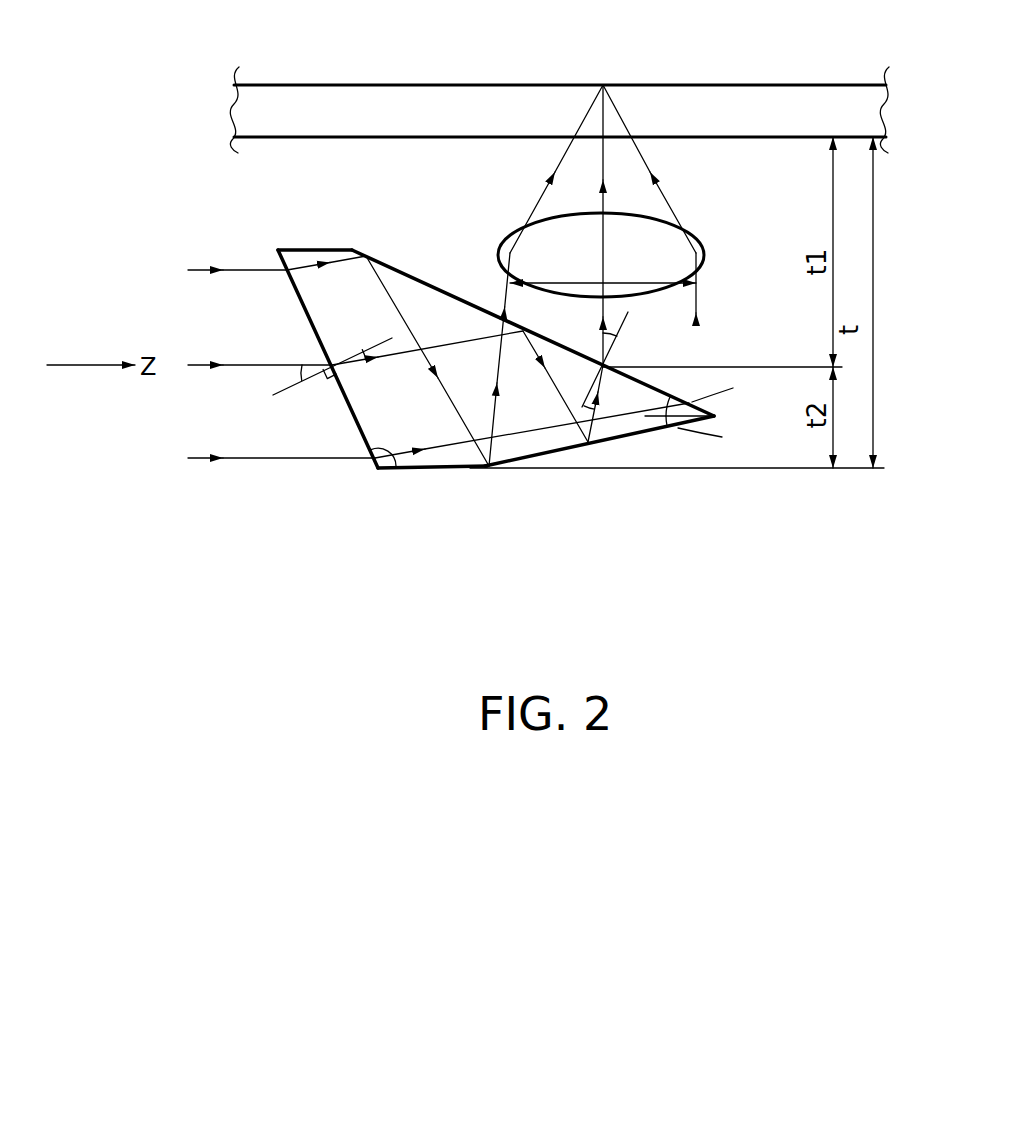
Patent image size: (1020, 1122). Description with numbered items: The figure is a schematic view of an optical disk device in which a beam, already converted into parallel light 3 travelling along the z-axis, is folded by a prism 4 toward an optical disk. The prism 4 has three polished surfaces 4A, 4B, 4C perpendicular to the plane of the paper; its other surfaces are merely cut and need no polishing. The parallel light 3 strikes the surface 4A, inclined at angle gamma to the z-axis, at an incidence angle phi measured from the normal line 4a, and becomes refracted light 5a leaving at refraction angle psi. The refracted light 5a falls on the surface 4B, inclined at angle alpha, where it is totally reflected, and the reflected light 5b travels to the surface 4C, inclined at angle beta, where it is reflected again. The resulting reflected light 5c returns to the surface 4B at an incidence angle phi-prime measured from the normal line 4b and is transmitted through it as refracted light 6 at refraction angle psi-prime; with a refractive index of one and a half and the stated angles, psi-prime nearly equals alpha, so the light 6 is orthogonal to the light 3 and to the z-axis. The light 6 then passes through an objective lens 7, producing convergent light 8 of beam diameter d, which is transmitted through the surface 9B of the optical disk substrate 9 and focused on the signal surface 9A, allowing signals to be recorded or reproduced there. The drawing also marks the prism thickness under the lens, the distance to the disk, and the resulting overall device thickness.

The parallel light 3 is at (245, 368).
The prism 4 is at (316, 247).
The surface 4A is at (310, 322).
The surface 4B is at (425, 283).
The surface 4C is at (633, 432).
The normal line 4a is at (277, 396).
The normal line 4b is at (626, 322).
The refracted light 5a is at (401, 359).
The reflected light 5b is at (552, 374).
The reflected light 5c is at (600, 397).
The refracted light 6 is at (612, 336).
The objective lens 7 is at (702, 245).
The convergent light 8 is at (606, 198).
The optical disk substrate 9 is at (813, 84).
The signal surface 9A is at (762, 85).
The surface 9B is at (782, 137).